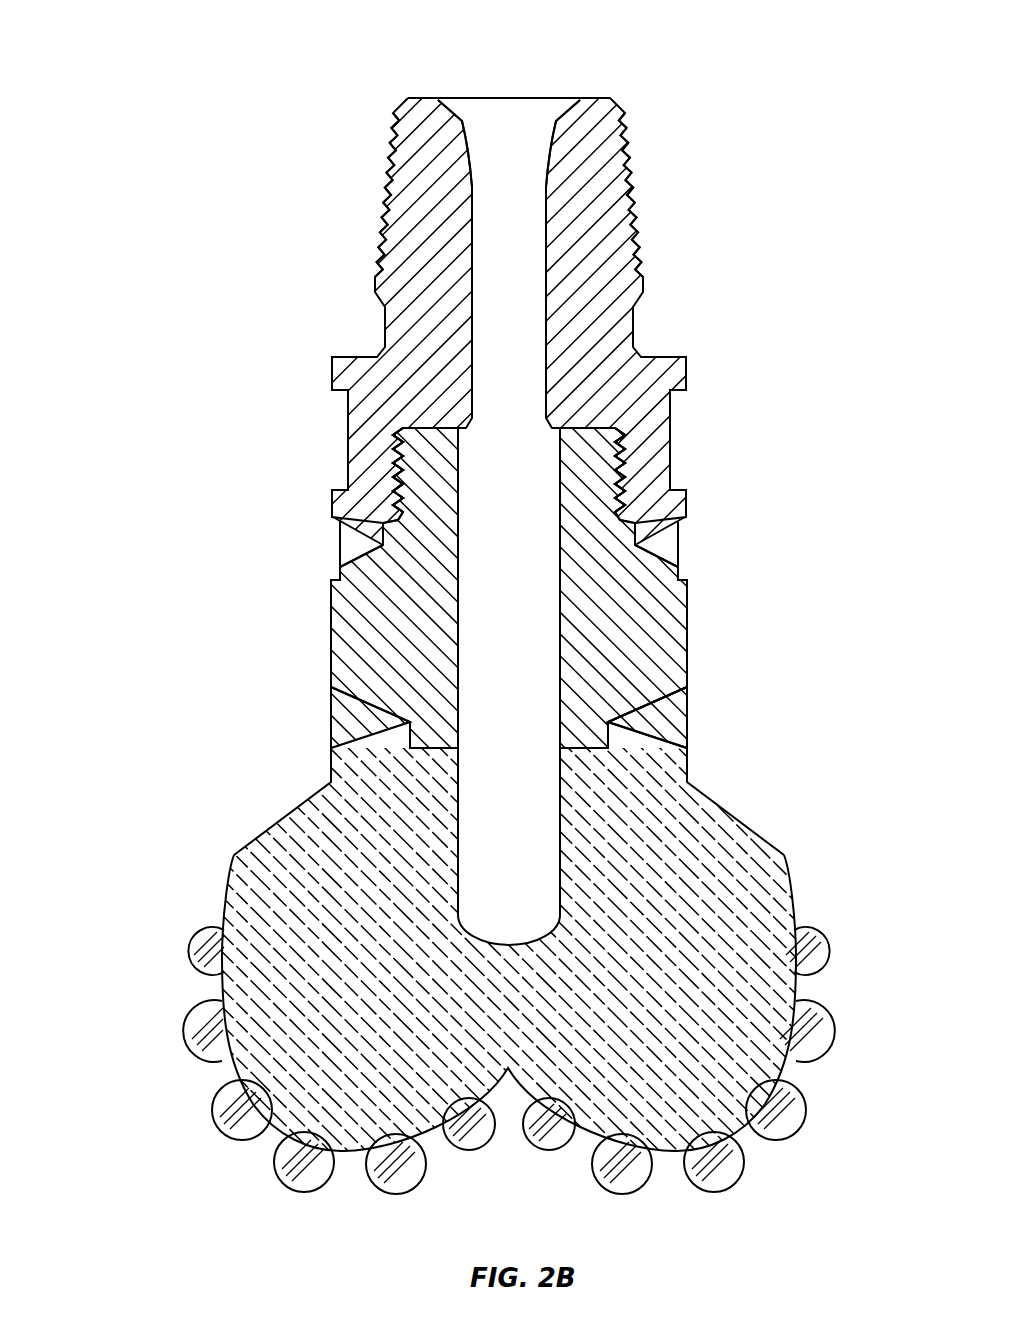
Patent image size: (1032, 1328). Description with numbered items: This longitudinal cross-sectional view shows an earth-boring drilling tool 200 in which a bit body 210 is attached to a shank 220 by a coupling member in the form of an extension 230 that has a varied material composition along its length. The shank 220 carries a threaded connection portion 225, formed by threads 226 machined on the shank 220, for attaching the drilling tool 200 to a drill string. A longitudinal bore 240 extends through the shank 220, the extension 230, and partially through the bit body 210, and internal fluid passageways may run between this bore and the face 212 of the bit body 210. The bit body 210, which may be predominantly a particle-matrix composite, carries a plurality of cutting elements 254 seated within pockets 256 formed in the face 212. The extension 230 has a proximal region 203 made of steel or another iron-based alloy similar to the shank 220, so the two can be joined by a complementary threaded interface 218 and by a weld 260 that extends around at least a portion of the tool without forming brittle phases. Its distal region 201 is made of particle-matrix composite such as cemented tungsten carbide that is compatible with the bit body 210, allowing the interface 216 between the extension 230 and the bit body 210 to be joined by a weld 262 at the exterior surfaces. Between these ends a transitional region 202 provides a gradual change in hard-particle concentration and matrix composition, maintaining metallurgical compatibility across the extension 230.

The earth-boring drilling tool 200 is at (195, 112).
The distal region 201 is at (437, 705).
The transitional region 202 is at (397, 602).
The proximal region 203 is at (597, 443).
The bit body 210 is at (738, 937).
The face 212 is at (222, 992).
The interface 216 is at (612, 722).
The complementary threaded interface 218 is at (625, 462).
The shank 220 is at (377, 377).
The threaded connection portion 225 is at (422, 261).
The threads 226 is at (388, 168).
The extension 230 is at (672, 625).
The longitudinal bore 240 is at (522, 137).
The cutting elements 254 is at (287, 1177).
The pockets 256 is at (252, 1112).
The weld 260 is at (357, 544).
The weld 262 is at (670, 710).